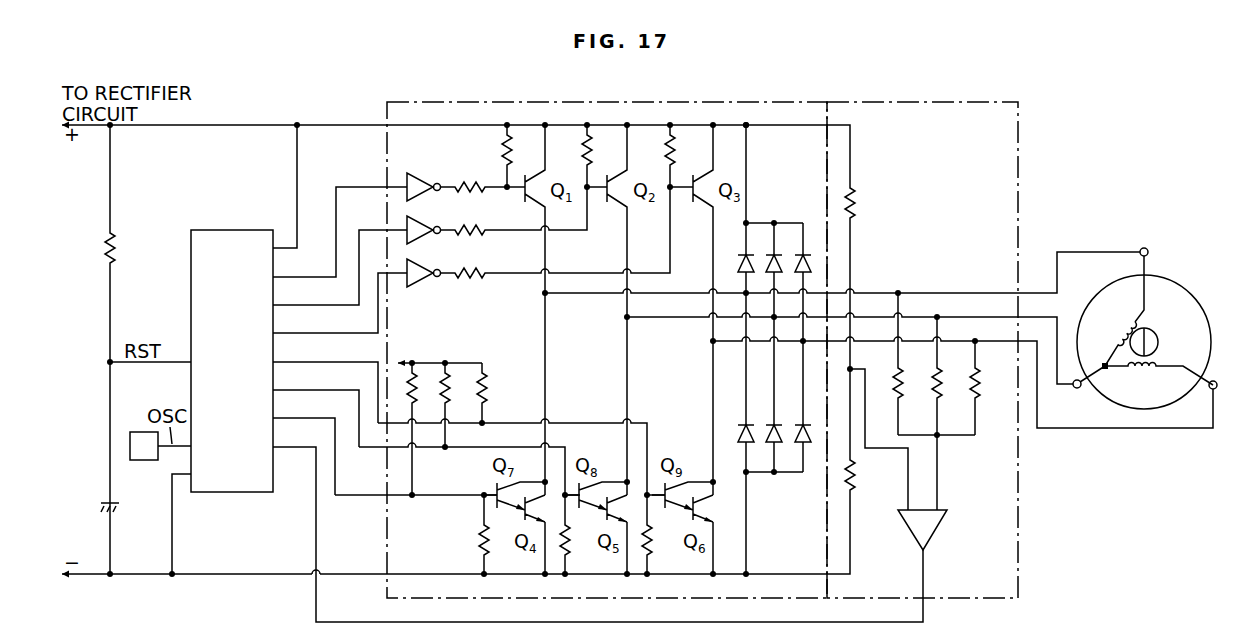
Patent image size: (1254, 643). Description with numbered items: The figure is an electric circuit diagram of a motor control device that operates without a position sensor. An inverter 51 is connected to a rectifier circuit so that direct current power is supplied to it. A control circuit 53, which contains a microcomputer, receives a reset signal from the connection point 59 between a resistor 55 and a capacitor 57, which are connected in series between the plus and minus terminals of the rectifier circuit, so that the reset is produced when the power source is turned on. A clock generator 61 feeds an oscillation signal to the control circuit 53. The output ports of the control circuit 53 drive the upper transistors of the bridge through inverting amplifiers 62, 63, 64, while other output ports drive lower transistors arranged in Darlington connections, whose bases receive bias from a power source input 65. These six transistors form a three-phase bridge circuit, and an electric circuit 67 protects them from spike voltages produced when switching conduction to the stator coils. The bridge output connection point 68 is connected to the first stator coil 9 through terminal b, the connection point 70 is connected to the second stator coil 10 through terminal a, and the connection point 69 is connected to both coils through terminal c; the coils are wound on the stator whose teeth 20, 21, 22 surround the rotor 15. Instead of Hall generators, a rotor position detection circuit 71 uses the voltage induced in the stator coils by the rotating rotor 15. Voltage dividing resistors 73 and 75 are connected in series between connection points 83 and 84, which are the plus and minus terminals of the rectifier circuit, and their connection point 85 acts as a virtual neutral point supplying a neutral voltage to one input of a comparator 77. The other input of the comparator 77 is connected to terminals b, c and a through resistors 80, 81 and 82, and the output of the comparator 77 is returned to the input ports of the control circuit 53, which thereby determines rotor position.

The first winding 9 is at (1118, 329).
The second winding 10 is at (1145, 373).
The rotor 15 is at (1152, 329).
The first tooth 20 is at (1157, 325).
The second tooth 21 is at (1103, 396).
The third tooth 22 is at (1149, 340).
The inverter 51 is at (762, 102).
The control circuit 53 is at (232, 230).
The resistor 55 is at (114, 246).
The capacitor 57 is at (108, 502).
The connection point 59 is at (107, 362).
The clock generator 61 is at (139, 461).
The inverting amplifier 62 is at (427, 168).
The inverting amplifier 63 is at (422, 224).
The inverting amplifier 64 is at (422, 268).
The power source input 65 is at (448, 367).
The electric circuit 67 is at (780, 225).
The connection point 68 is at (548, 296).
The connection point 69 is at (630, 320).
The connection point 70 is at (713, 341).
The rotor position detection circuit 71 is at (935, 102).
The voltage dividing resistor 73 is at (854, 199).
The voltage dividing resistor 75 is at (854, 474).
The comparator 77 is at (940, 532).
The resistor 80 is at (900, 395).
The resistor 81 is at (939, 395).
The resistor 82 is at (978, 395).
The connection point 83 is at (748, 127).
The connection point 84 is at (748, 573).
The connection point 85 is at (854, 368).